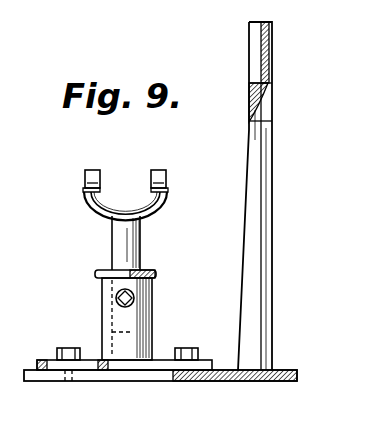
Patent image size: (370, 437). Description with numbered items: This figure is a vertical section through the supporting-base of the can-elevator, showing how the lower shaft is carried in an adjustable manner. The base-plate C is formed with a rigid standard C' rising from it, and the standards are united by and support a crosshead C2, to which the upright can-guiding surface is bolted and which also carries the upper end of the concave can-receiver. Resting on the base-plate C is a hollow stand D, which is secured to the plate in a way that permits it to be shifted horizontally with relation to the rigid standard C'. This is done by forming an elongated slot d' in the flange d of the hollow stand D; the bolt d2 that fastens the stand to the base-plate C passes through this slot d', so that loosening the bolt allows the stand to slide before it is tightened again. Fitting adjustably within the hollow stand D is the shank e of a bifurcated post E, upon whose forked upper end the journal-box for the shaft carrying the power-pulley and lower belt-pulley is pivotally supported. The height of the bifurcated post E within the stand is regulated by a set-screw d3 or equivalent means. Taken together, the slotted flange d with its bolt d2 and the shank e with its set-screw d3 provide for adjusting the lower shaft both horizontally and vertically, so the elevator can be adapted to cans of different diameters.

The base-plate C is at (160, 386).
The rigid standard C' is at (267, 196).
The crosshead C2 is at (275, 72).
The bifurcated post E is at (125, 195).
The shank e is at (134, 243).
The hollow stand D is at (146, 343).
The set-screw d3 is at (151, 294).
The flange d is at (131, 354).
The bolt d2 is at (122, 342).
The elongated slot d' is at (76, 340).